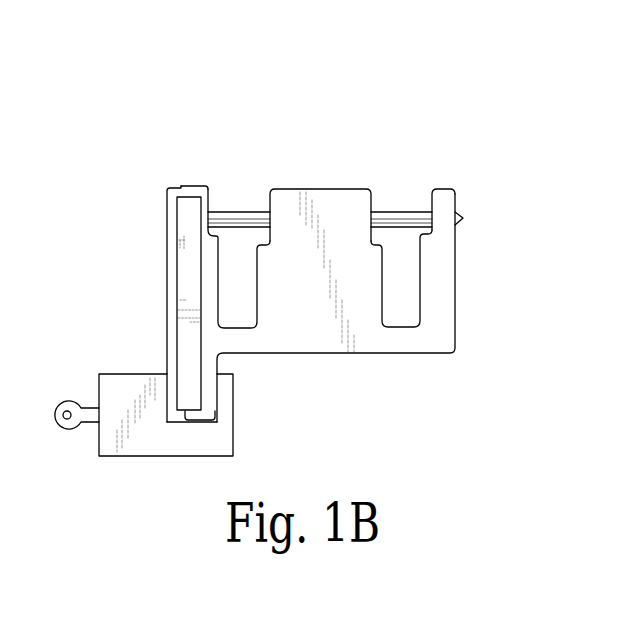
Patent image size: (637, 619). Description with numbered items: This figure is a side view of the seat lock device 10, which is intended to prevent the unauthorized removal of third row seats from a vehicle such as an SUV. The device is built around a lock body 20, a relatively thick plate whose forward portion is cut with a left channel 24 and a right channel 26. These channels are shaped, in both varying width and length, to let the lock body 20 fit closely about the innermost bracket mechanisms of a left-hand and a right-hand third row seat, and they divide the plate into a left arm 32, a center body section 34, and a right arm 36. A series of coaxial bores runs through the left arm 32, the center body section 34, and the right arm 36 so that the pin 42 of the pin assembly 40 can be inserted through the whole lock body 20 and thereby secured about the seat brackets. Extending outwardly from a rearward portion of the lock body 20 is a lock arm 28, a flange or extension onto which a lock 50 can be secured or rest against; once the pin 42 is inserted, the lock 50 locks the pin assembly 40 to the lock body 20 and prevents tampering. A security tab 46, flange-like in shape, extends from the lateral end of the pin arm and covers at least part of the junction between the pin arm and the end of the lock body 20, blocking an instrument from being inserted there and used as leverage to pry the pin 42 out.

The seat lock device 10 is at (102, 78).
The lock body 20 is at (388, 342).
The left channel 24 is at (246, 191).
The right channel 26 is at (406, 201).
The lock arm 28 is at (207, 391).
The left arm 32 is at (195, 188).
The center body section 34 is at (345, 198).
The right arm 36 is at (444, 197).
The pin assembly 40 is at (164, 217).
The pin 42 is at (232, 211).
The security tab 46 is at (187, 278).
The lock 50 is at (157, 447).